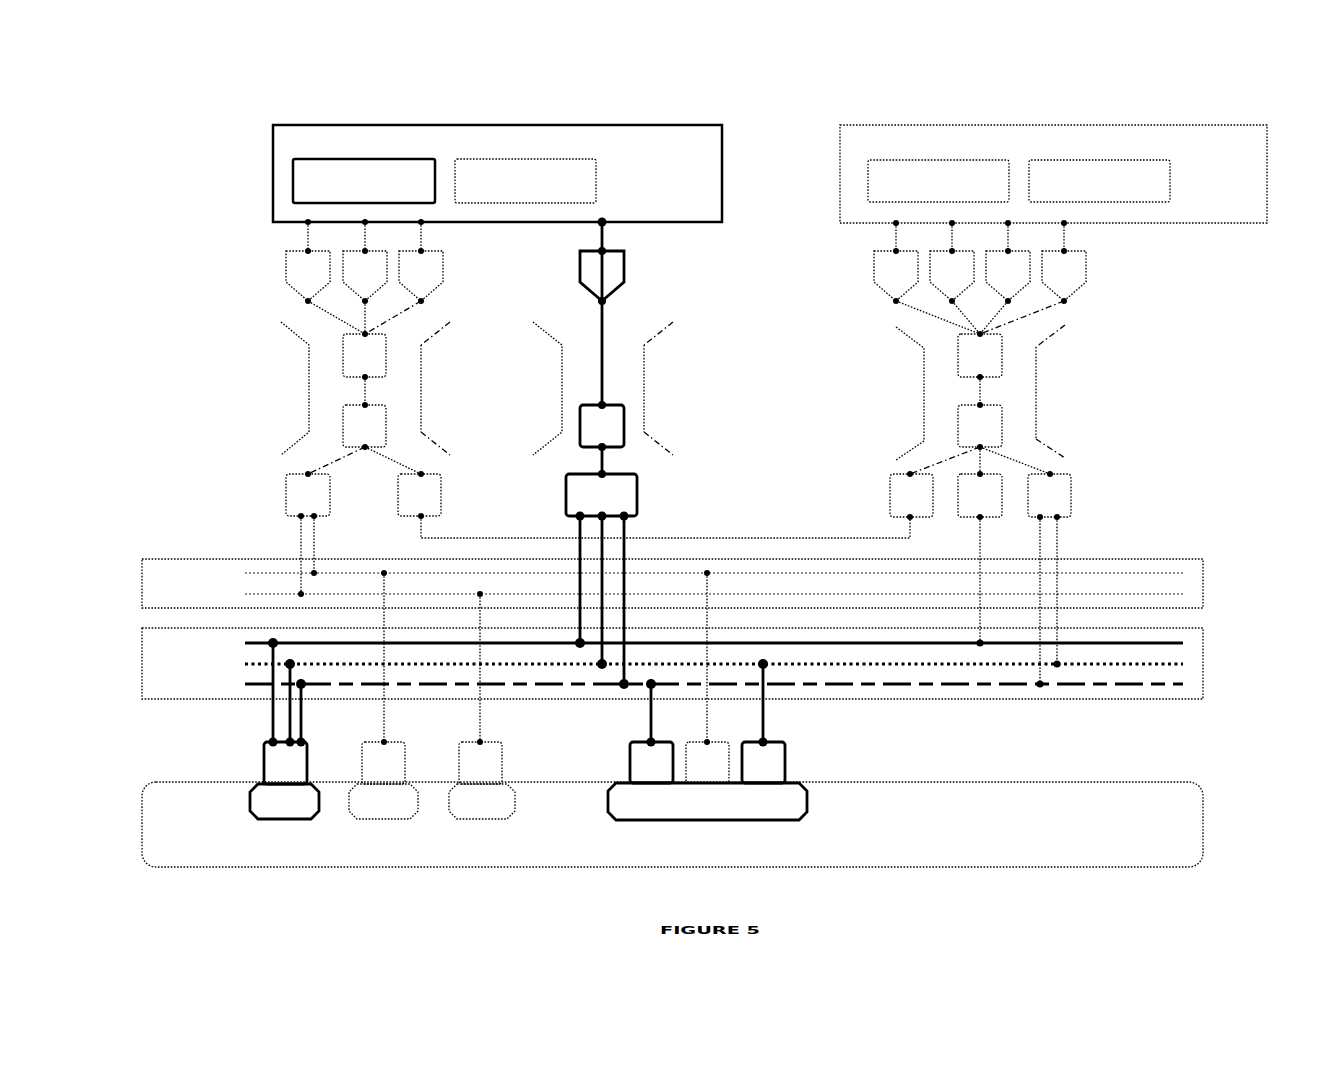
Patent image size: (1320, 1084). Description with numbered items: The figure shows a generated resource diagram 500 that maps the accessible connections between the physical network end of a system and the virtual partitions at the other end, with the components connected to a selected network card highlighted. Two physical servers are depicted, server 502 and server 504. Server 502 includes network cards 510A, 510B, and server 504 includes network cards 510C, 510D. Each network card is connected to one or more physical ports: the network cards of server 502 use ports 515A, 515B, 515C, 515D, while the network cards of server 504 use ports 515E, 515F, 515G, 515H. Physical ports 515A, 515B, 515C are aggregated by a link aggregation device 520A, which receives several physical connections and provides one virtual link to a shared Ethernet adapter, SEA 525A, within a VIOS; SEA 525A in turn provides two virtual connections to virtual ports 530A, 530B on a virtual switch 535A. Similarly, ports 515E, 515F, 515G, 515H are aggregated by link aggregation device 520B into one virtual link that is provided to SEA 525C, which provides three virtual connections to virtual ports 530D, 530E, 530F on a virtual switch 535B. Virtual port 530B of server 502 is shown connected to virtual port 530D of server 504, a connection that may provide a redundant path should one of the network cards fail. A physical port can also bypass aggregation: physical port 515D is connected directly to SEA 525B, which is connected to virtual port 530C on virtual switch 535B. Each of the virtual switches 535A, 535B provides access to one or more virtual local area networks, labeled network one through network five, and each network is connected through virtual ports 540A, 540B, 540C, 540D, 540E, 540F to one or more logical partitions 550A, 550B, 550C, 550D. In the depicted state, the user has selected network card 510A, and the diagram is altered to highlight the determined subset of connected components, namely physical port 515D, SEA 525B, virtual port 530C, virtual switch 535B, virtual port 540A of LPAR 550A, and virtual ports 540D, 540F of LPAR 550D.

The resource diagram 500 is at (790, 99).
The server 502 is at (497, 173).
The server 504 is at (1053, 174).
The network card 510A is at (356, 158).
The network card 510B is at (515, 158).
The network card 510C is at (903, 160).
The network card 510D is at (1065, 160).
The physical port 515A is at (308, 276).
The physical port 515B is at (365, 276).
The physical port 515C is at (421, 276).
The physical port 515D is at (602, 276).
The physical port 515E is at (896, 276).
The physical port 515F is at (952, 276).
The physical port 515G is at (1008, 276).
The physical port 515H is at (1064, 276).
The link aggregation device 520A is at (364, 355).
The link aggregation device 520B is at (980, 355).
The SEA 525A is at (364, 426).
The SEA 525B is at (602, 426).
The SEA 525C is at (980, 426).
The virtual port 530A is at (308, 495).
The virtual port 530B is at (419, 495).
The virtual port 530C is at (601, 495).
The virtual port 530D is at (911, 495).
The virtual port 530E is at (980, 495).
The virtual port 530F is at (1049, 495).
The virtual switch 535A is at (1196, 559).
The virtual switch 535B is at (1196, 628).
The virtual port 540A is at (285, 761).
The virtual port 540B is at (383, 761).
The virtual port 540C is at (480, 761).
The virtual port 540D is at (651, 761).
The virtual port 540E is at (707, 761).
The virtual port 540F is at (763, 761).
The logical partition 550A is at (284, 801).
The logical partition 550B is at (383, 801).
The logical partition 550C is at (482, 801).
The logical partition 550D is at (707, 801).